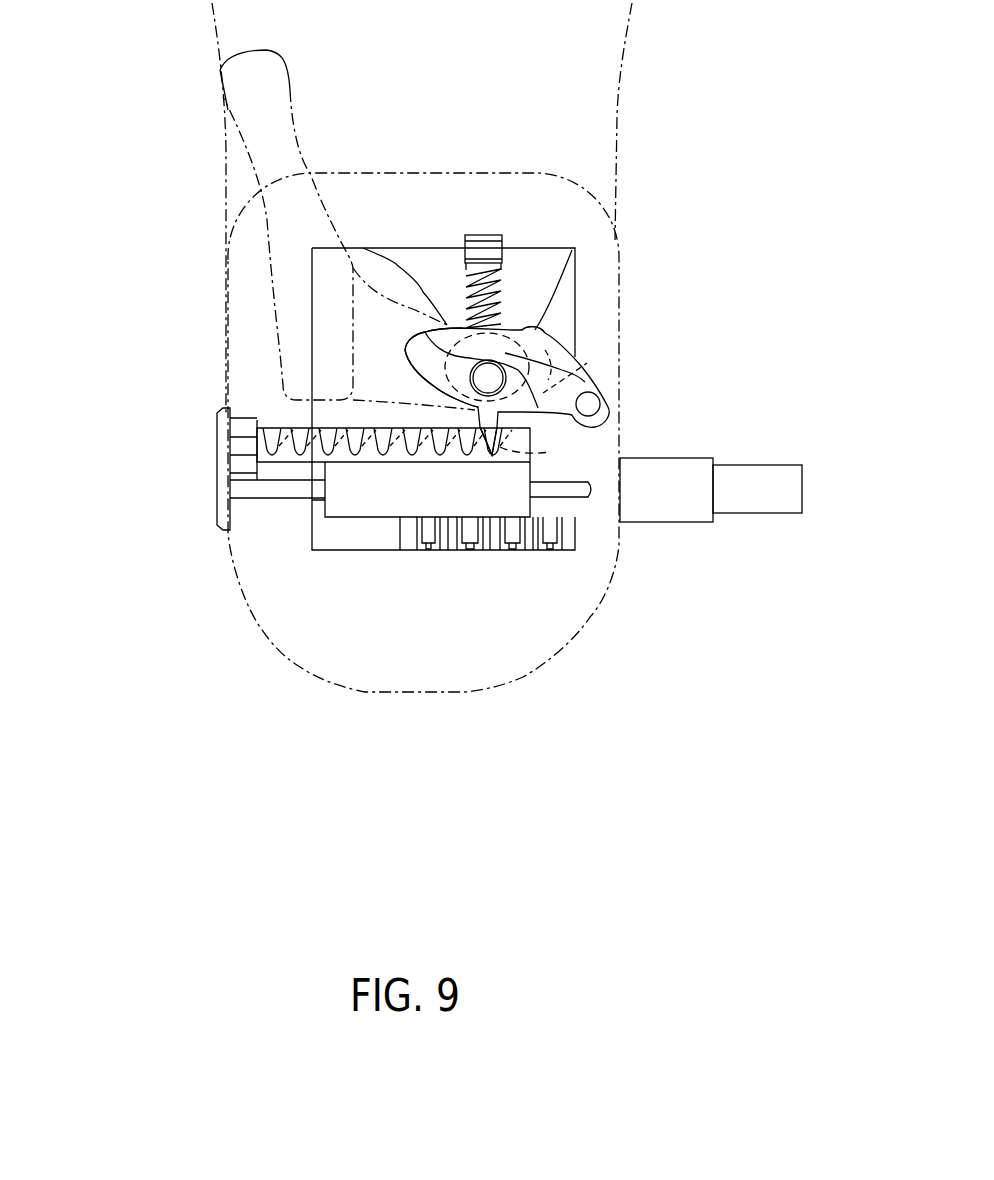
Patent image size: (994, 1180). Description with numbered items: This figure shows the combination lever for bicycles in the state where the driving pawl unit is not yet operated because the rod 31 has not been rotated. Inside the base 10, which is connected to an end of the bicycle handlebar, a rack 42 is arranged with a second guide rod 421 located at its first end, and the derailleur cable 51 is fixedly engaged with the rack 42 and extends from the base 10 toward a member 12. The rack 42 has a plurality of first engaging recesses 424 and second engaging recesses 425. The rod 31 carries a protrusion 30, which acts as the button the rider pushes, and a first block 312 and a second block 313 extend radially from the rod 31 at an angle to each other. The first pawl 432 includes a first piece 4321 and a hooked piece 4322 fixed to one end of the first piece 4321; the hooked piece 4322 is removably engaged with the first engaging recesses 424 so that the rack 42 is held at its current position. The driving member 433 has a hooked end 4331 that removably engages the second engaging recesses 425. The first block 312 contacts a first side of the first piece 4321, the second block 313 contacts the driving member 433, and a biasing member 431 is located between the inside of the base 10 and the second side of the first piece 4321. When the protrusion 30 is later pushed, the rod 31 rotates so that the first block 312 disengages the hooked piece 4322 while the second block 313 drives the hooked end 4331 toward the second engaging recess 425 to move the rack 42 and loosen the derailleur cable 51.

The base 10 is at (562, 177).
The motor 12 is at (683, 508).
The protrusion 30 is at (262, 87).
The rod 31 is at (477, 420).
The first block 312 is at (413, 357).
The second block 313 is at (537, 330).
The rack 42 is at (350, 505).
The second guide rod 421 is at (272, 490).
The first engaging recesses 424 is at (273, 437).
The second engaging recesses 425 is at (550, 452).
The biasing member 431 is at (505, 242).
The first pawl 432 is at (600, 407).
The first piece 4321 is at (363, 248).
The hooked piece 4322 is at (495, 457).
The hooked end 4331 is at (547, 363).
The driving member 433 is at (587, 363).
The derailleur cable 51 is at (580, 493).